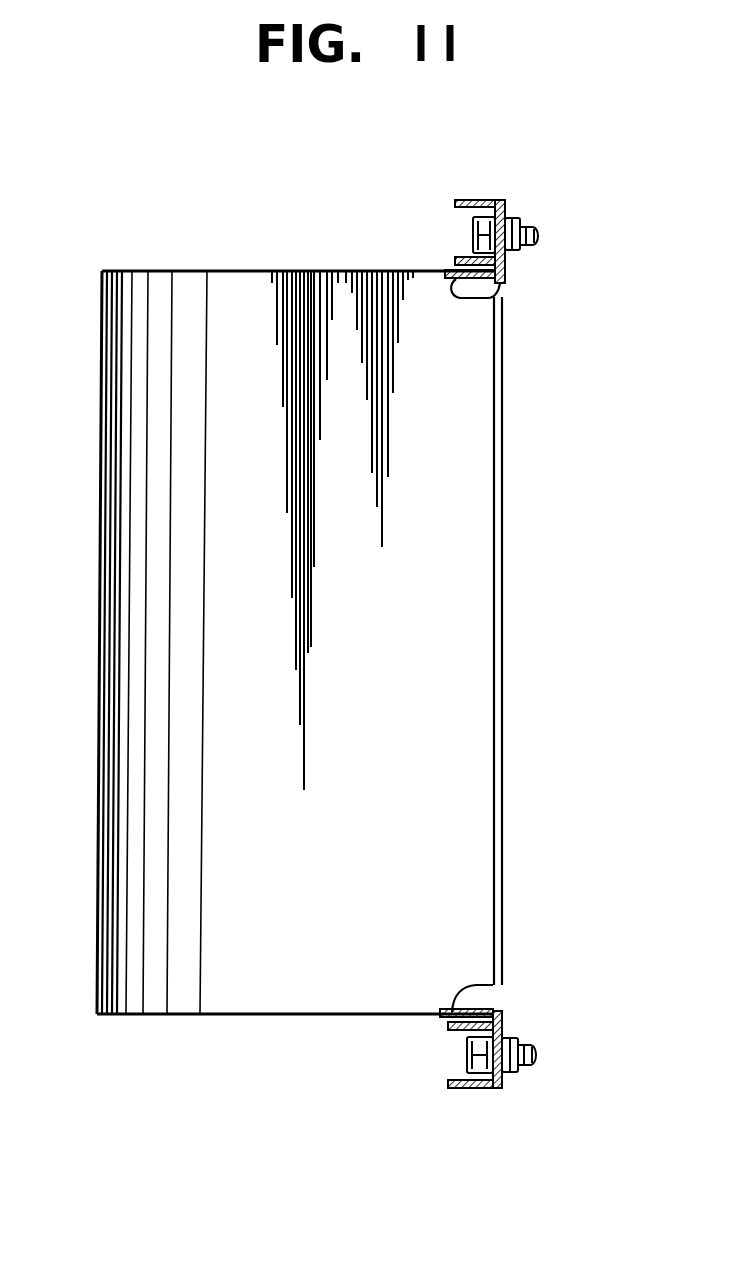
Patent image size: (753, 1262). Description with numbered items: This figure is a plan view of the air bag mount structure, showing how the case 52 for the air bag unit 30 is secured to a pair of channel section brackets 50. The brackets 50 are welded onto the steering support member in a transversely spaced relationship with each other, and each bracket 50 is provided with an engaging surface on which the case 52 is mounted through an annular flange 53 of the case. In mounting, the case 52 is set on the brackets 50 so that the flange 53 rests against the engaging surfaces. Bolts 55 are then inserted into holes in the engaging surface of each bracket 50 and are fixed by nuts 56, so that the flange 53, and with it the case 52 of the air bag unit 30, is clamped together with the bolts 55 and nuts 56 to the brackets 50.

The air bag unit 30 is at (343, 269).
The channel section bracket 50 is at (470, 201).
The case 52 is at (125, 551).
The annular flange 53 is at (500, 1016).
The bolt 55 is at (540, 235).
The nut 56 is at (521, 219).